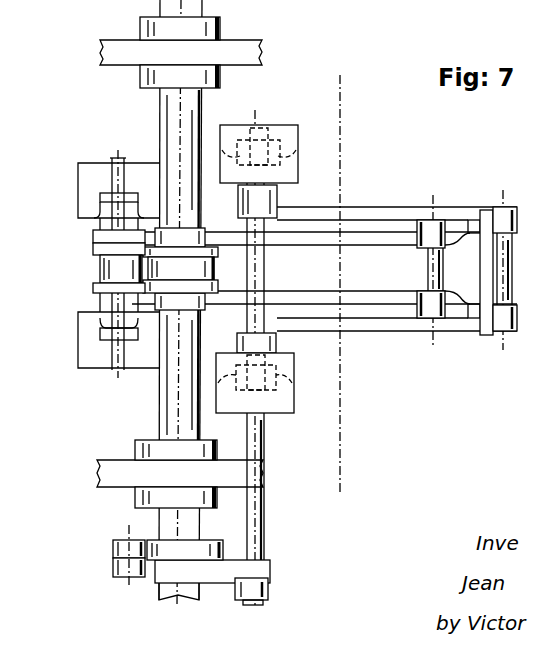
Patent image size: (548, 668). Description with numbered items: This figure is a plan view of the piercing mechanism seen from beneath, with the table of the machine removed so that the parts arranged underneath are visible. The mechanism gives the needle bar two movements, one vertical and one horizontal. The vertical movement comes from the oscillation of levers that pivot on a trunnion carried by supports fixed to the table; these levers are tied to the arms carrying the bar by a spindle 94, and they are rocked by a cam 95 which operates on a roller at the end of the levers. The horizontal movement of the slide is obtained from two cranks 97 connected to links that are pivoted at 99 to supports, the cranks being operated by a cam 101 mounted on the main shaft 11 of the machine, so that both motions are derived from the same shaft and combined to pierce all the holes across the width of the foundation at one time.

The main shaft 11 is at (160, 380).
The spindle 94 is at (500, 277).
The cam 95 is at (214, 544).
The cranks 97 is at (362, 284).
The pivot 99 is at (122, 170).
The cam 101 is at (218, 265).